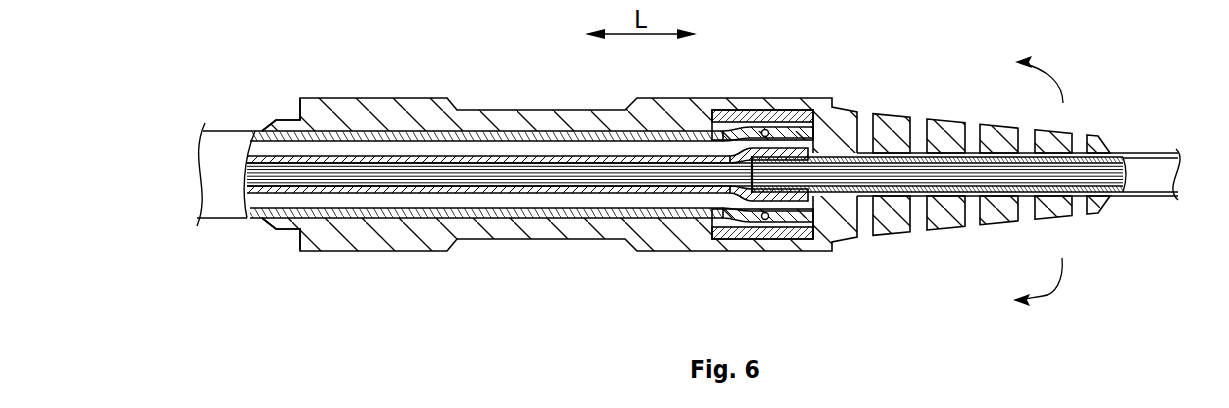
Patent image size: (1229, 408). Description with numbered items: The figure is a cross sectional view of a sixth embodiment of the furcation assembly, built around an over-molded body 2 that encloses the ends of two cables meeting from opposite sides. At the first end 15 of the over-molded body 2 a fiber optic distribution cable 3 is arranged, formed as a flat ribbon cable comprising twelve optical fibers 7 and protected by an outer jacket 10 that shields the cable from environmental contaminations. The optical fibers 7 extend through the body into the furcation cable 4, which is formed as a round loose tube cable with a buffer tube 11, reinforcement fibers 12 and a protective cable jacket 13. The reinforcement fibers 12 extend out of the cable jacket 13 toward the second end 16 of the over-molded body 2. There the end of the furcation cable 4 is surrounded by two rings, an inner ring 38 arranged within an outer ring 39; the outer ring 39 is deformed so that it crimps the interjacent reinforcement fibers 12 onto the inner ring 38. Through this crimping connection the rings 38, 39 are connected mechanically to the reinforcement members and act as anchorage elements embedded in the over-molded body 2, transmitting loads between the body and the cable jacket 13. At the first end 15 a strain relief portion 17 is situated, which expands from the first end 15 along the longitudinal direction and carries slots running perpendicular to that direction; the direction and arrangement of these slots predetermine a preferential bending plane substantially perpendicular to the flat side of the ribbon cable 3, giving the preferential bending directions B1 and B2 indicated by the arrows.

The over-molded body 2 is at (600, 118).
The fiber optic distribution cable 3 is at (1148, 182).
The furcation cable 4 is at (232, 205).
The optical fibers 7 is at (278, 180).
The outer jacket 10 is at (1108, 153).
The buffer tube 11 is at (395, 197).
The reinforcement fibers 12 is at (268, 138).
The cable jacket 13 is at (530, 215).
The first end 15 is at (1098, 205).
The second end 16 is at (287, 118).
The strain relief portion 17 is at (1107, 135).
The inner ring 38 is at (725, 230).
The outer ring 39 is at (808, 238).
The preferential bending direction B1 is at (1043, 296).
The preferential bending direction B2 is at (1050, 76).